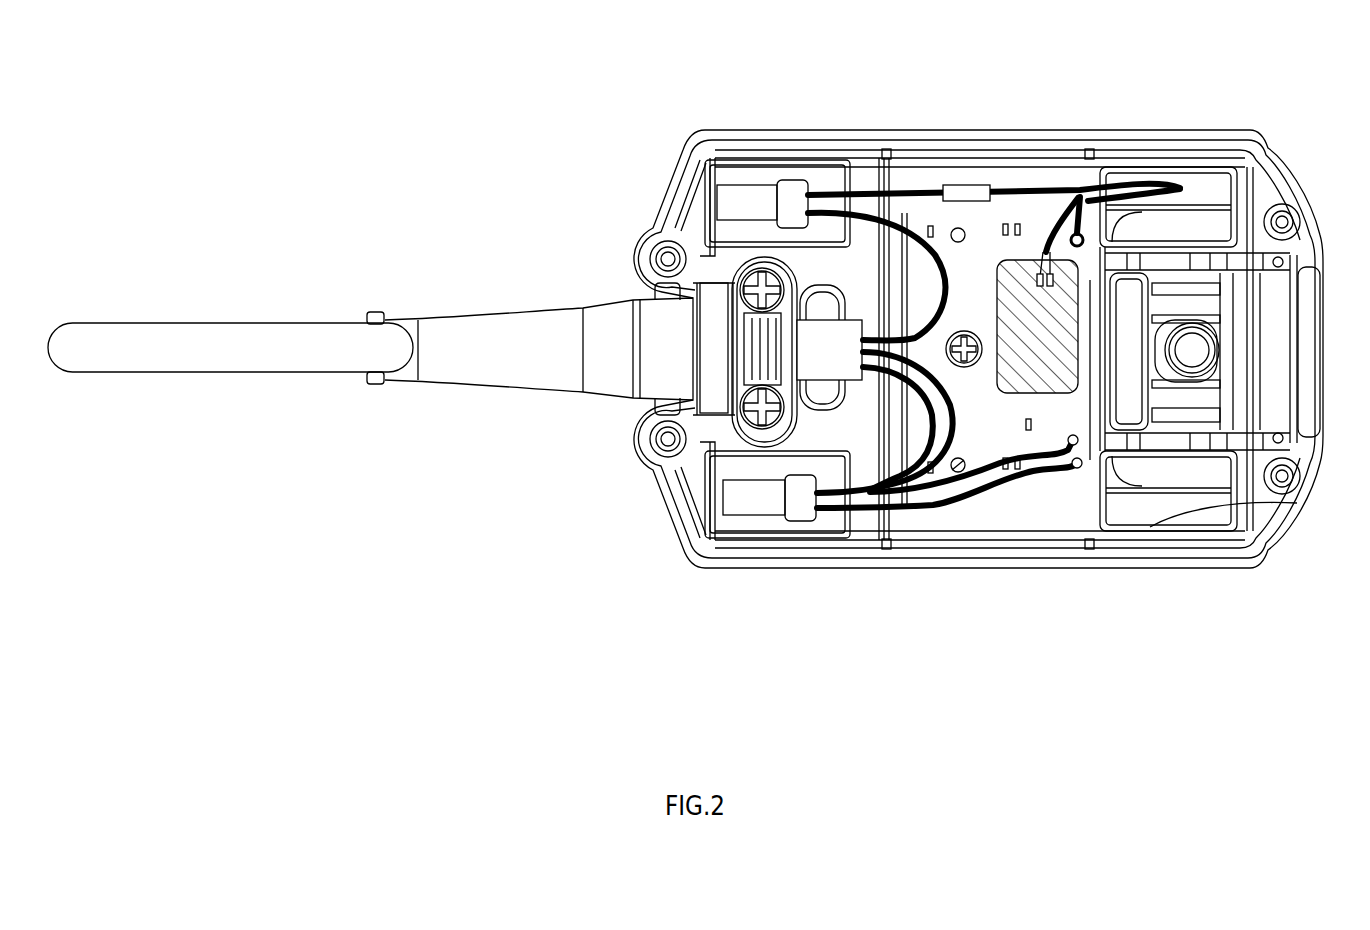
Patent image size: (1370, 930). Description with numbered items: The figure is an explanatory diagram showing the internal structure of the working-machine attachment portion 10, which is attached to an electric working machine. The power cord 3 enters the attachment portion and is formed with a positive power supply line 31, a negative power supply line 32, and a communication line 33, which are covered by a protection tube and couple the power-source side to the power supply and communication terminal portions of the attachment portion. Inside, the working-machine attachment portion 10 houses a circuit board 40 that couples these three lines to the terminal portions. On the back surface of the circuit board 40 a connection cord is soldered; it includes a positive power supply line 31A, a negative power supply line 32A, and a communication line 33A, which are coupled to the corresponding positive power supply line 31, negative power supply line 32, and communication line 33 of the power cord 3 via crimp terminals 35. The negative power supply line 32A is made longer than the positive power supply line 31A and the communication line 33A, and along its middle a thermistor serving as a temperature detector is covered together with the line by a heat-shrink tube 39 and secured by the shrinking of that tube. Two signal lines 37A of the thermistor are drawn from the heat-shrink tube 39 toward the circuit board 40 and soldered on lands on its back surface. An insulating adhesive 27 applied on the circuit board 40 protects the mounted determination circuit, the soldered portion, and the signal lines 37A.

The working-machine attachment portion 10 is at (790, 95).
The power cord 3 is at (377, 352).
The crimp terminals 35 is at (736, 190).
The negative power supply line 32 is at (921, 215).
The insulating adhesive 27 is at (997, 290).
The heat-shrink tube 39 is at (1003, 190).
The signal lines 37A is at (1056, 212).
The negative power supply line 32A is at (1135, 185).
The communication line 33 is at (937, 463).
The positive power supply line 31 is at (967, 467).
The communication line 33A is at (1027, 470).
The positive power supply line 31A is at (1067, 490).
The circuit board 40 is at (1073, 418).